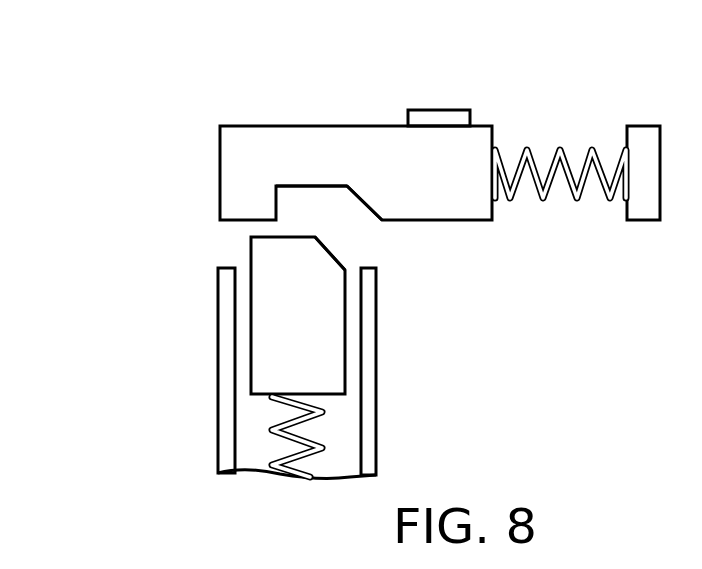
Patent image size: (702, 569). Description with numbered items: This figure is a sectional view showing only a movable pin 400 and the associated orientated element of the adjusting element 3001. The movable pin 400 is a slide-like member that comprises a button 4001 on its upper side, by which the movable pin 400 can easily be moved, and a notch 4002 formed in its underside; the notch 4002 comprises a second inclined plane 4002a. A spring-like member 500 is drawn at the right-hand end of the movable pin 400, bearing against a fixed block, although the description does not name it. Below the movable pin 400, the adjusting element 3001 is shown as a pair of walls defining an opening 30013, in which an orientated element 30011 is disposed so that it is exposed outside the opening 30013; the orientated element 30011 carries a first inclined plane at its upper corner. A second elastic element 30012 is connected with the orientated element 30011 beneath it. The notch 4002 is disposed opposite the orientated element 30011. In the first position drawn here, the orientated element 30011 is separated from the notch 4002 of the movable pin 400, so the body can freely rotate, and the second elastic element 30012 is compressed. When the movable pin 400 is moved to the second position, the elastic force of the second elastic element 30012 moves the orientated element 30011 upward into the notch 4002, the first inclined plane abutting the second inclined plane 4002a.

The movable pin 400 is at (312, 137).
The button 4001 is at (438, 118).
The notch 4002 is at (307, 188).
The second inclined plane 4002a is at (365, 205).
The spring 500 is at (543, 157).
The adjusting element 3001 is at (227, 362).
The orientated element 30011 is at (273, 294).
The second elastic element 30012 is at (275, 430).
The opening 30013 is at (352, 277).